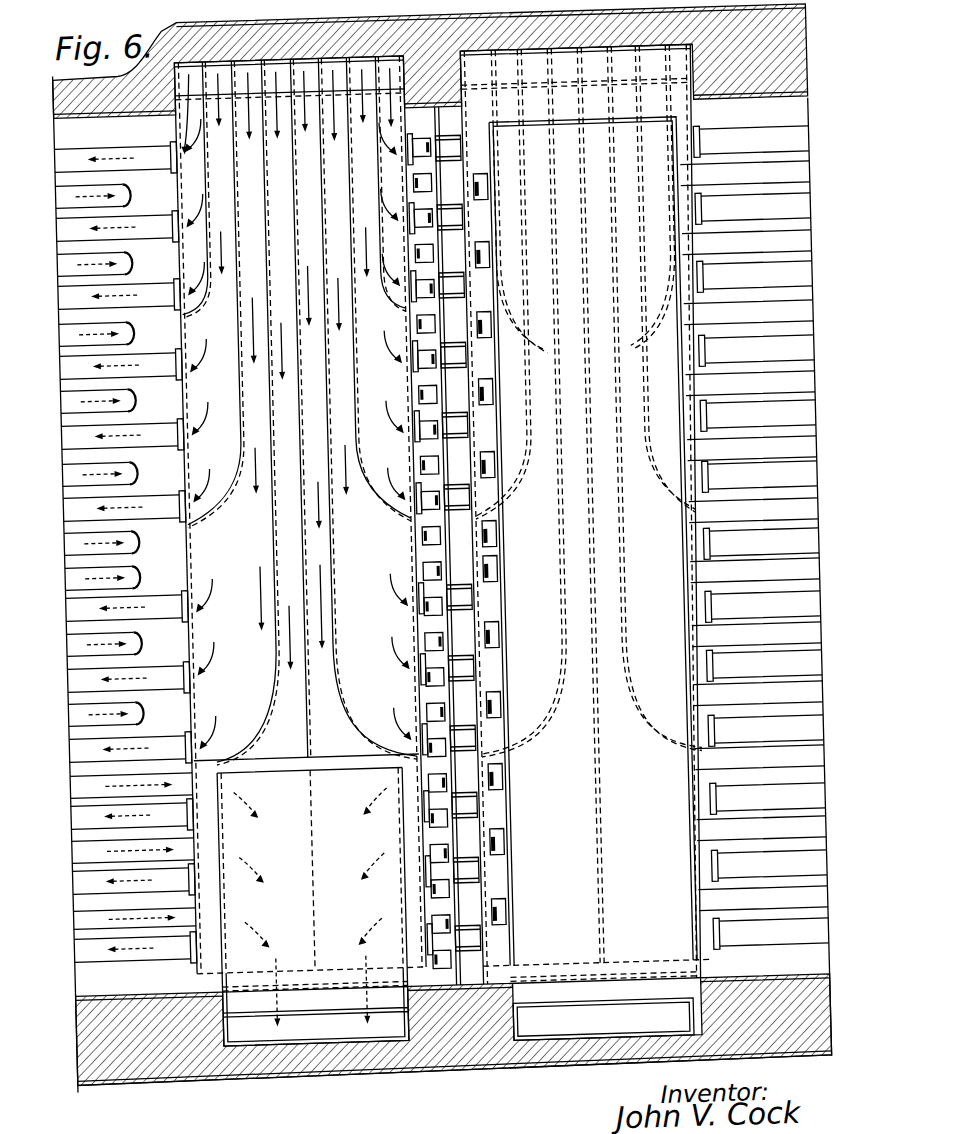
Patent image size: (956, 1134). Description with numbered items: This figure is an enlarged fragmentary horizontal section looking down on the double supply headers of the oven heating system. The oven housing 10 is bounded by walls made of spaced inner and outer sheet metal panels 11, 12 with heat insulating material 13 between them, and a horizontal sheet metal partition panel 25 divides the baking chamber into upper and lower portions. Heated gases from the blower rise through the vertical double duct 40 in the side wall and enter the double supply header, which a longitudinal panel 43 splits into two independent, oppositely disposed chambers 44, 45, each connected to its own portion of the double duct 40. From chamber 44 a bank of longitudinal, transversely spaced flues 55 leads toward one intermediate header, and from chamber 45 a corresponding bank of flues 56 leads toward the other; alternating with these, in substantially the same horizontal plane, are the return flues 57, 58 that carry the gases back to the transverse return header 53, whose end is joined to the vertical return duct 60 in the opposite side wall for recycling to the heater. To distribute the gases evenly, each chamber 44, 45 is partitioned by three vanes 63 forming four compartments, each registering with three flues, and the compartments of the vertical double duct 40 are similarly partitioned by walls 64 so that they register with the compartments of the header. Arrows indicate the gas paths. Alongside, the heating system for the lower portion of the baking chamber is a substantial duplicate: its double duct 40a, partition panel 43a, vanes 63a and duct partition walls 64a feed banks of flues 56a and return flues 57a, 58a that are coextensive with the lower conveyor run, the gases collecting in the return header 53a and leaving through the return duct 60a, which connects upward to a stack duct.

The housing 10 is at (170, 1077).
The inner sheet metal panel 11 is at (165, 984).
The outer sheet metal panel 12 is at (122, 1076).
The heat insulating material 13 is at (106, 1057).
The partition panel 25 is at (429, 124).
The vertical double duct 40 is at (299, 52).
The vertical double duct of lower heating system 40a is at (570, 68).
The partition panel of double supply header 43 is at (308, 555).
The partition panel of lower double supply header 43a is at (607, 610).
The first chamber of double supply header 44 is at (188, 616).
The second chamber of double supply header 45 is at (440, 634).
The return header 53 is at (247, 950).
The return header of lower heating system 53a is at (543, 932).
The flues 55 is at (155, 217).
The flues 56 is at (437, 362).
The flues of lower heating system 56a is at (797, 830).
The return flues 57 is at (95, 535).
The return flues of lower heating system 57a is at (497, 250).
The return flues 58 is at (437, 262).
The return flues of lower heating system 58a is at (762, 318).
The vertical return duct 60 is at (285, 1041).
The return duct of lower heating system 60a is at (558, 1042).
The vanes 63 is at (205, 300).
The vanes of lower heating system 63a is at (583, 400).
The partition walls 64 is at (265, 60).
The partition walls of lower heating system 64a is at (558, 72).